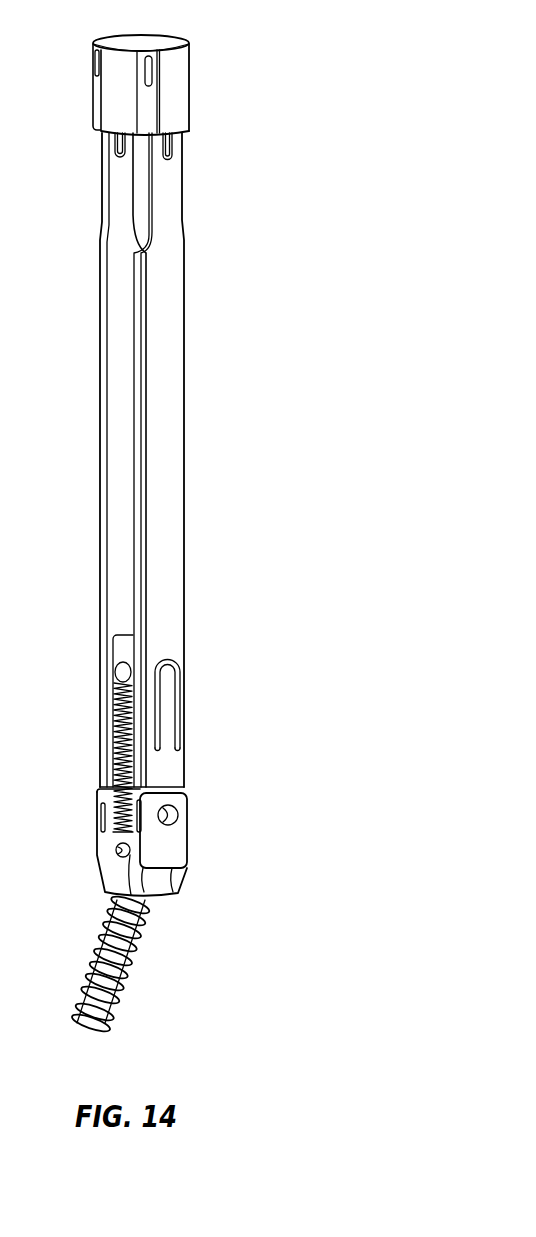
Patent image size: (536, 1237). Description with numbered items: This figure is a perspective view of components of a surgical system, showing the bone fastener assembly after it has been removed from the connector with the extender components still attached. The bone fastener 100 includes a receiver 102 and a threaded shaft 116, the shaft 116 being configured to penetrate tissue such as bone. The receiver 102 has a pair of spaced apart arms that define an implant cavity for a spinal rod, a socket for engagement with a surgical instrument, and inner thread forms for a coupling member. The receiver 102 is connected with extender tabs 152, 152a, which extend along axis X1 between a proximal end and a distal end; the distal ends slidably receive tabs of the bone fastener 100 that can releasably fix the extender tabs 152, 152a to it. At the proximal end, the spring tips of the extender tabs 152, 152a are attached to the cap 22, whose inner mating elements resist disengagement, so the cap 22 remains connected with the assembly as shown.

The cap 22 is at (176, 97).
The extender tab 152 is at (122, 373).
The extender tab 152a is at (162, 400).
The receiver 102 is at (173, 842).
The threaded shaft 116 is at (123, 987).
The bone fastener 100 is at (168, 952).